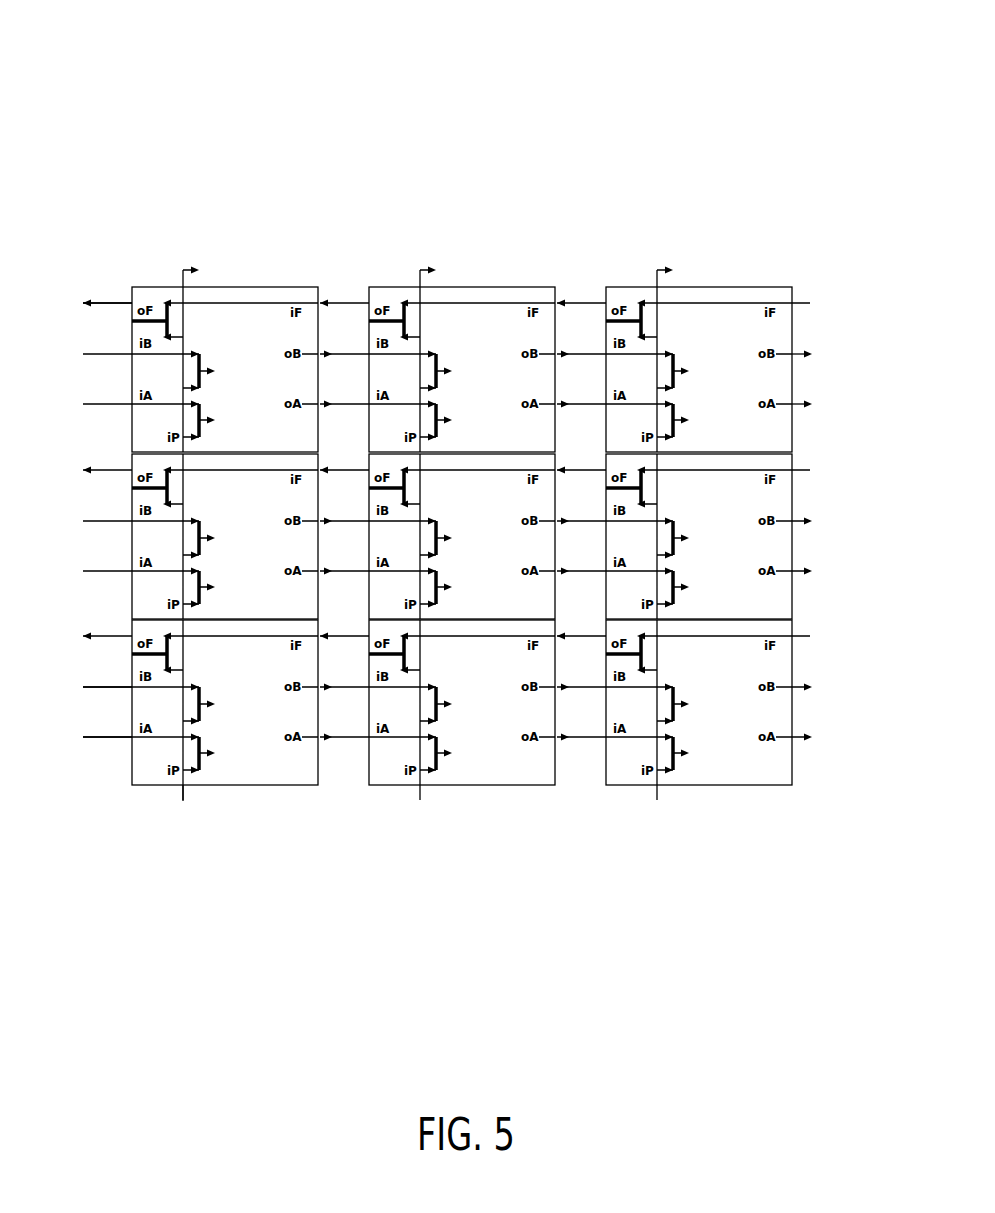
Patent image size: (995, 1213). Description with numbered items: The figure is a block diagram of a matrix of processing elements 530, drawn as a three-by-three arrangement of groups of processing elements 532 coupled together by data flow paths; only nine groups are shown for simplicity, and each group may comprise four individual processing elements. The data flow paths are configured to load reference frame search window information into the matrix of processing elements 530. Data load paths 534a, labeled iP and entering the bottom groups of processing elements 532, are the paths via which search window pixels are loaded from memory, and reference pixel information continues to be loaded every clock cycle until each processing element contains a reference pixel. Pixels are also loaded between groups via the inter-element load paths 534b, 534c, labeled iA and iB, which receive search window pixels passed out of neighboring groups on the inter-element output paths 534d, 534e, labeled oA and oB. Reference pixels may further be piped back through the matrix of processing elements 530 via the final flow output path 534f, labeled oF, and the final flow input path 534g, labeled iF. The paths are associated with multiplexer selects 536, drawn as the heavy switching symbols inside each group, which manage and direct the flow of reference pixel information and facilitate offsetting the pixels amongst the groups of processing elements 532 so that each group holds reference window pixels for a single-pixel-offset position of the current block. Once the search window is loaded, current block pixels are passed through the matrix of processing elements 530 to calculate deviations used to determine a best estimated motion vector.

The matrix of processing elements 530 is at (132, 68).
The group of processing elements 532 is at (246, 287).
The data load path 534a is at (180, 795).
The inter-element load path 534b is at (95, 735).
The inter-element load path 534c is at (103, 685).
The inter-element output path 534d is at (798, 403).
The inter-element output path 534e is at (798, 353).
The final flow output path 534f is at (102, 302).
The final flow input path 534g is at (798, 303).
The multiplexer selects 536 is at (203, 760).